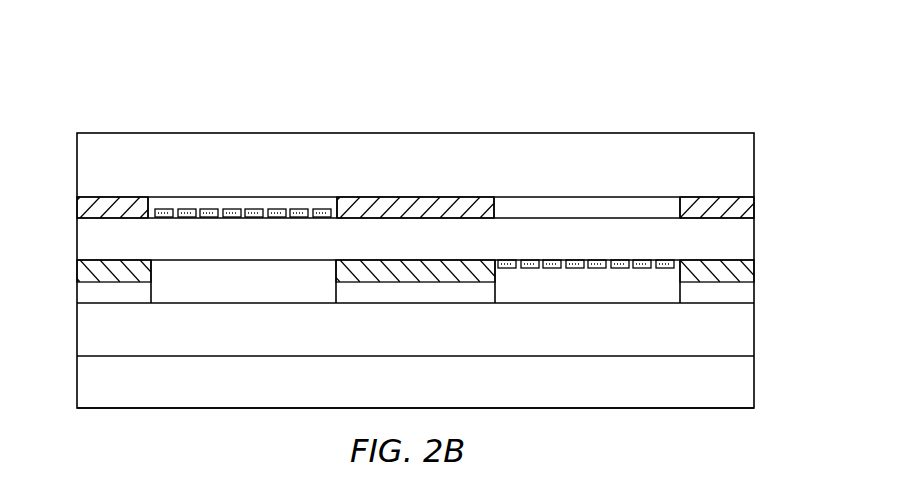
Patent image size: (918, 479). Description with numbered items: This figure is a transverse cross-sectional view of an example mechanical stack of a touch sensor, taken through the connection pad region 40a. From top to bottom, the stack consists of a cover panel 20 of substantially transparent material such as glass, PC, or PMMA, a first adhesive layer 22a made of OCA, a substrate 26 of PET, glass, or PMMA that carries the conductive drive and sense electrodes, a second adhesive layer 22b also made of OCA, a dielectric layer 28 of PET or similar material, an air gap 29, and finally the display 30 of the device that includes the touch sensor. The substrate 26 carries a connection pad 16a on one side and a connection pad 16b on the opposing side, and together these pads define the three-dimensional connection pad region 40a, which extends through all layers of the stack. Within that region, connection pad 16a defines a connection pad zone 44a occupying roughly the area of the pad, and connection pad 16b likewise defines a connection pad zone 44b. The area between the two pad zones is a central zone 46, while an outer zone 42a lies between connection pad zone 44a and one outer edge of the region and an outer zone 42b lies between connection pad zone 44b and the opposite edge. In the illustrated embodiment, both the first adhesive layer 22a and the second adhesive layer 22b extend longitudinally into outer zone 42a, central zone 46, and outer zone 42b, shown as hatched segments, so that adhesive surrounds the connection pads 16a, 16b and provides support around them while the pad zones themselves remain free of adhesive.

The cover panel 20 is at (754, 165).
The first adhesive layer 22a is at (754, 207).
The substrate 26 is at (754, 240).
The second adhesive layer 22b is at (754, 272).
The dielectric layer 28 is at (754, 292).
The air gap 29 is at (754, 325).
The display 30 is at (754, 378).
The connection pad 16a is at (233, 209).
The connection pad 16b is at (597, 268).
The connection pad region 40a is at (56, 133).
The outer zone 42a is at (148, 120).
The connection pad zone 44a is at (332, 120).
The central zone 46 is at (492, 120).
The connection pad zone 44b is at (678, 120).
The outer zone 42b is at (754, 120).